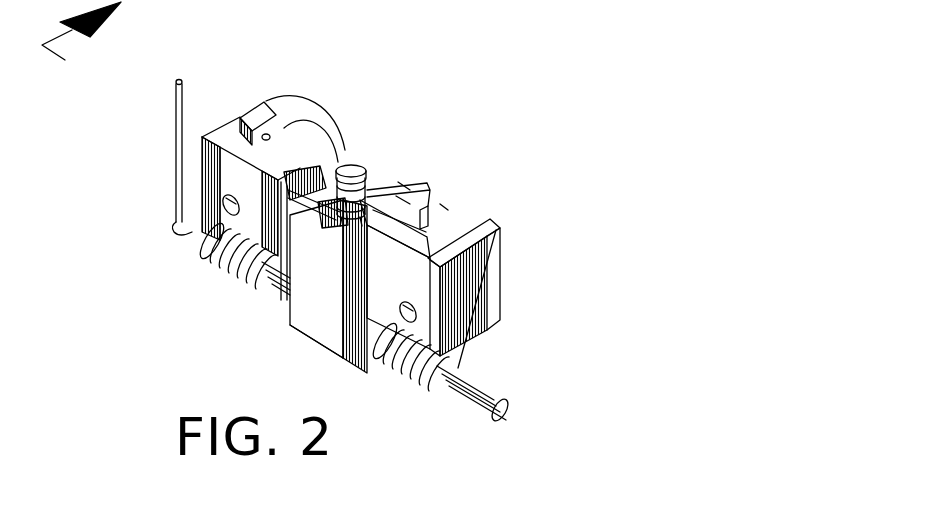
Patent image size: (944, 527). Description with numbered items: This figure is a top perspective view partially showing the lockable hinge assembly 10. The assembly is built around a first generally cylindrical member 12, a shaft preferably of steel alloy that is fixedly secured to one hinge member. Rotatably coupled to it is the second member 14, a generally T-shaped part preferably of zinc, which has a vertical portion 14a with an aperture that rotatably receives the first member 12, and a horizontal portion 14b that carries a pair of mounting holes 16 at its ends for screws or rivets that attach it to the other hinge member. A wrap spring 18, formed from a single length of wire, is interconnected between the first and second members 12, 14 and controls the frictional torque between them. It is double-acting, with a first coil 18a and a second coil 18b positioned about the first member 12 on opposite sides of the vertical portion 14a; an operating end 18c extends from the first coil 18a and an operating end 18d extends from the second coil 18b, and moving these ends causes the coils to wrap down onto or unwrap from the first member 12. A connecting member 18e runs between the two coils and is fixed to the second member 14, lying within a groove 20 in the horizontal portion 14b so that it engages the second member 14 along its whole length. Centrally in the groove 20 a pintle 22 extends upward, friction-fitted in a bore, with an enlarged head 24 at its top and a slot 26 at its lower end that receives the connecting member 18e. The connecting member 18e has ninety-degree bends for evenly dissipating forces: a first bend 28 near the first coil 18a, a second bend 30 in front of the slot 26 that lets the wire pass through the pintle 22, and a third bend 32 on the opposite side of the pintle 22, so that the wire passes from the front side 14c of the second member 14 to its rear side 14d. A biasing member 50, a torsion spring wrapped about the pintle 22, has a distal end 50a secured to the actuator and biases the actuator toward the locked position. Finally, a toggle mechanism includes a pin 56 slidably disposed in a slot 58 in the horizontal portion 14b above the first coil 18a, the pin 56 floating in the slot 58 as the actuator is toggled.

The lockable hinge assembly 10 is at (640, 212).
The first generally cylindrical member 12 is at (462, 399).
The second member 14 is at (334, 303).
The vertical portion 14a is at (332, 341).
The horizontal portion 14b is at (206, 137).
The front side 14c is at (283, 153).
The rear side 14d is at (467, 213).
The mounting holes 16 is at (224, 203).
The wrap spring 18 is at (246, 290).
The first coil 18a is at (212, 263).
The second coil 18b is at (417, 388).
The operating end of first coil 18c is at (175, 80).
The operating end of second coil 18d is at (478, 254).
The connecting member 18e is at (404, 178).
The groove 20 is at (354, 161).
The pintle 22 is at (376, 242).
The enlarged head 24 is at (387, 182).
The slot 26 is at (316, 333).
The first ninety-degree bend 28 is at (300, 140).
The second ninety-degree bend 30 is at (352, 232).
The third ninety-degree bend 32 is at (400, 197).
The biasing member 50 is at (400, 182).
The distal end of biasing member 50a is at (445, 203).
The pin 56 is at (284, 106).
The slot 58 is at (260, 100).